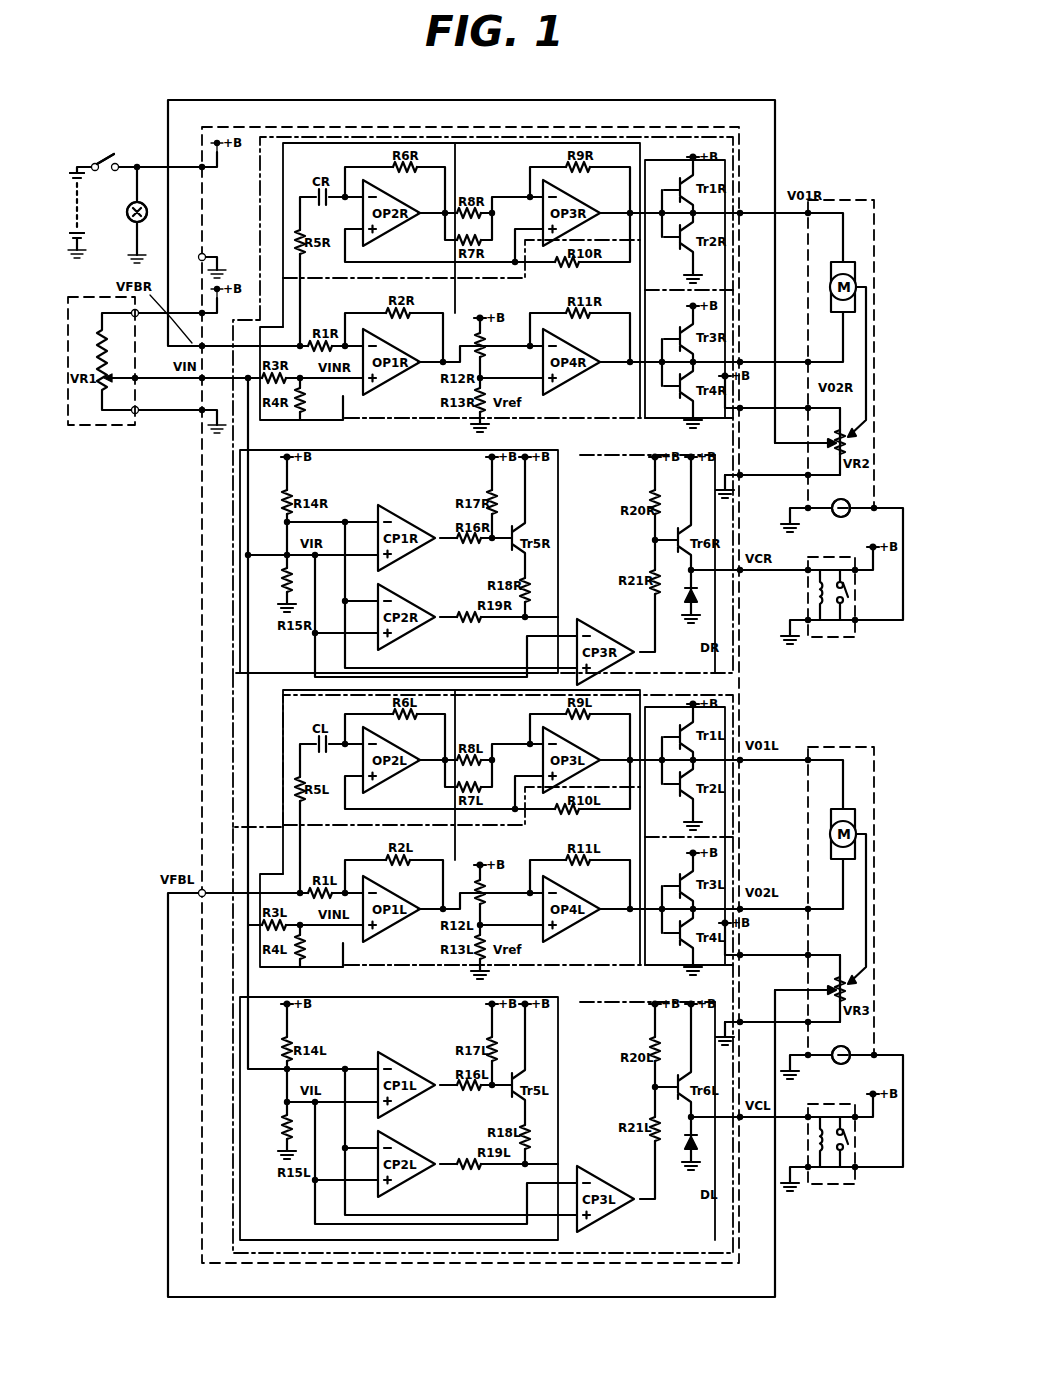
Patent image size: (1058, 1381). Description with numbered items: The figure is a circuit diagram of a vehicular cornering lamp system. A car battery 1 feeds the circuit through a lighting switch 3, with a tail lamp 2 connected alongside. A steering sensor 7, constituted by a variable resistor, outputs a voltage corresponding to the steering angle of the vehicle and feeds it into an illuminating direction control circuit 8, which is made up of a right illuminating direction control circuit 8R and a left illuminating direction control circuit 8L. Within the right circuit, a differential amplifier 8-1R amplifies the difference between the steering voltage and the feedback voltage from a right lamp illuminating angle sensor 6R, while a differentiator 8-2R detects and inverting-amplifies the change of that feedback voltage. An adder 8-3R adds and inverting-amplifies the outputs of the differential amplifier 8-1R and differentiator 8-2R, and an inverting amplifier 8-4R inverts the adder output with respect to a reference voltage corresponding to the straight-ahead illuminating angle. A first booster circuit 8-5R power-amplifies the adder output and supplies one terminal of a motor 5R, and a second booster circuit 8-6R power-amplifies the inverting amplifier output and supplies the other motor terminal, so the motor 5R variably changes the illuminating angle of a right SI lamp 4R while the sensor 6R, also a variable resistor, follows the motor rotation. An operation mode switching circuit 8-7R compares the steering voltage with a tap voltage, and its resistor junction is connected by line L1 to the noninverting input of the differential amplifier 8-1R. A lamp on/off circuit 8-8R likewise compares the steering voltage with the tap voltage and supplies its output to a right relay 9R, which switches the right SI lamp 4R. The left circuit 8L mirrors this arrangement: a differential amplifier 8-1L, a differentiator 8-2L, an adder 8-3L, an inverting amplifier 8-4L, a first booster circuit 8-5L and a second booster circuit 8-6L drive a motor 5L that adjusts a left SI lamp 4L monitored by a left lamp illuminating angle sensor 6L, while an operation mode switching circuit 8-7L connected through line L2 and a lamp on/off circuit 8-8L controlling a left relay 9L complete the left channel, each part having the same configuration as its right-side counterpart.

The car battery 1 is at (82, 214).
The tail lamp 2 is at (142, 222).
The lighting switch 3 is at (108, 152).
The steering sensor 7 is at (82, 426).
The illuminating direction control circuit 8 is at (520, 127).
The right illuminating direction control circuit 8R is at (260, 137).
The left illuminating direction control circuit 8L is at (232, 1253).
The differential amplifier 8-1R is at (353, 387).
The differentiator 8-2R is at (330, 143).
The adder 8-3R is at (565, 143).
The inverting amplifier 8-4R is at (610, 416).
The first booster circuit 8-5R is at (658, 160).
The second booster circuit 8-6R is at (745, 455).
The operation mode switching circuit 8-7R is at (399, 561).
The lamp on/off circuit 8-8R is at (600, 470).
The line L1 is at (506, 434).
The motor 5R is at (868, 287).
The right lamp illuminating angle sensor 6R is at (870, 441).
The right SI lamp 4R is at (852, 504).
The right relay 9R is at (820, 640).
The differential amplifier 8-1L is at (352, 934).
The differentiator 8-2L is at (283, 697).
The adder 8-3L is at (640, 694).
The inverting amplifier 8-4L is at (610, 963).
The first booster circuit 8-5L is at (740, 714).
The second booster circuit 8-6L is at (720, 990).
The operation mode switching circuit 8-7L is at (450, 1253).
The lamp on/off circuit 8-8L is at (650, 1253).
The line L2 is at (511, 981).
The motor 5L is at (868, 834).
The left lamp illuminating angle sensor 6L is at (862, 988).
The left SI lamp 4L is at (852, 1051).
The left relay 9L is at (810, 1187).